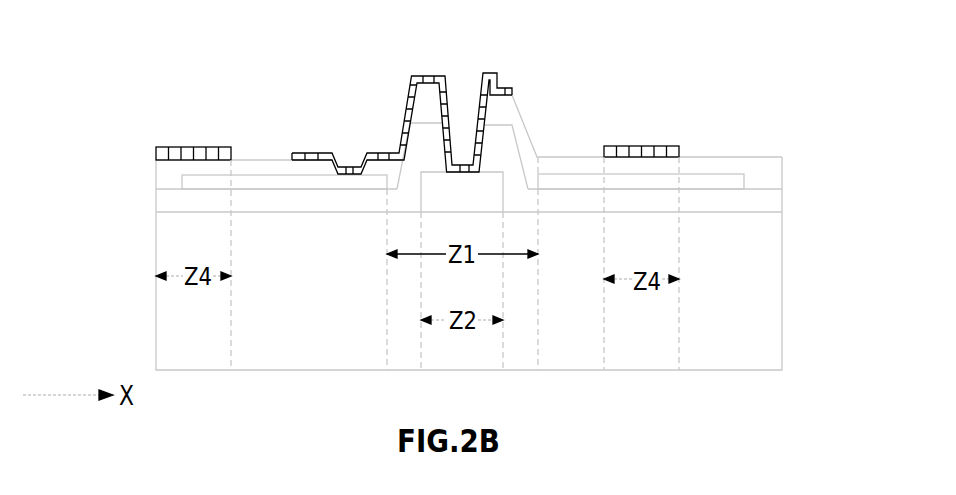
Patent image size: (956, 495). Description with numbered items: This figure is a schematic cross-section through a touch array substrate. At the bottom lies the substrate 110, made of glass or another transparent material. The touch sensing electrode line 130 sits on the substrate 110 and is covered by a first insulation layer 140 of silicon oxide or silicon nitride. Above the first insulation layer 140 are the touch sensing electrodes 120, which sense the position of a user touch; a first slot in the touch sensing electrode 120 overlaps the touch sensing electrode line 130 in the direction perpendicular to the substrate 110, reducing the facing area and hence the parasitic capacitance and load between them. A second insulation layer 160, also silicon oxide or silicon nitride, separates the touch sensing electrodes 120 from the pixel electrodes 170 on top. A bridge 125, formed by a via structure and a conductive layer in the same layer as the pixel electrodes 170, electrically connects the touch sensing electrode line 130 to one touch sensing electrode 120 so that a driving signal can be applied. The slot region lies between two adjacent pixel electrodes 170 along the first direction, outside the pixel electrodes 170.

The substrate 110 is at (507, 263).
The touch sensing electrode 120 is at (463, 132).
The bridge 125 is at (412, 77).
The touch sensing electrode line 130 is at (505, 151).
The first insulation layer 140 is at (748, 202).
The second insulation layer 160 is at (511, 142).
The pixel electrode 170 is at (432, 111).